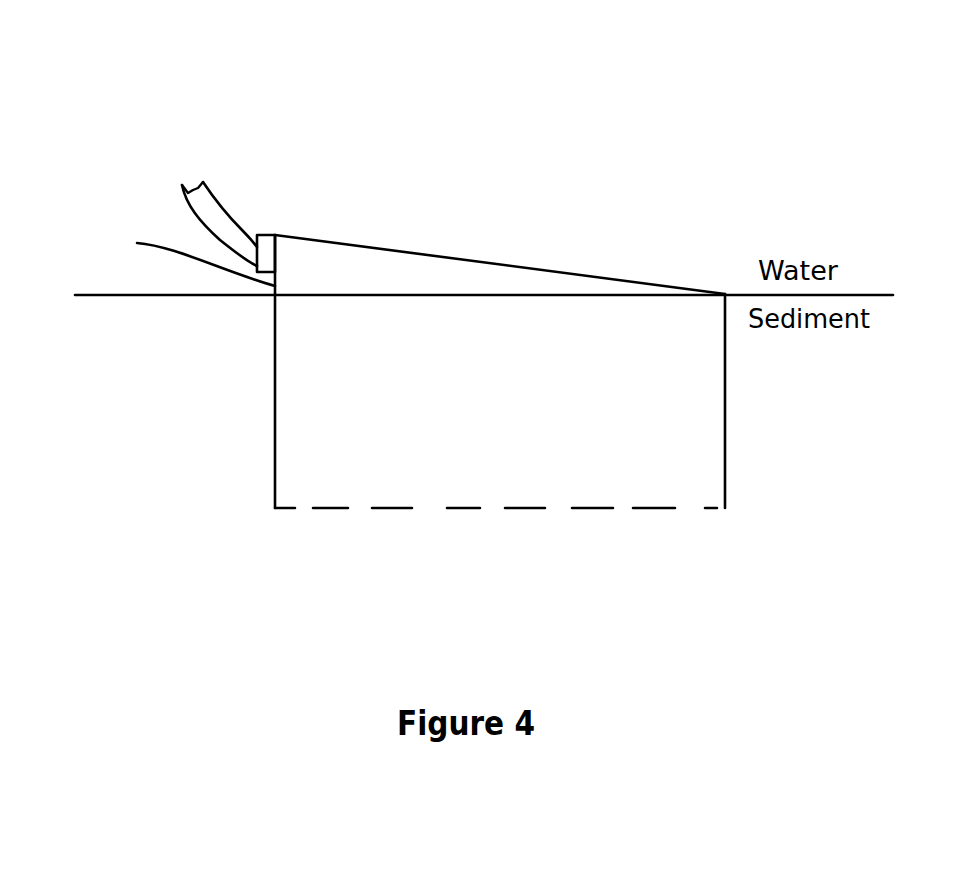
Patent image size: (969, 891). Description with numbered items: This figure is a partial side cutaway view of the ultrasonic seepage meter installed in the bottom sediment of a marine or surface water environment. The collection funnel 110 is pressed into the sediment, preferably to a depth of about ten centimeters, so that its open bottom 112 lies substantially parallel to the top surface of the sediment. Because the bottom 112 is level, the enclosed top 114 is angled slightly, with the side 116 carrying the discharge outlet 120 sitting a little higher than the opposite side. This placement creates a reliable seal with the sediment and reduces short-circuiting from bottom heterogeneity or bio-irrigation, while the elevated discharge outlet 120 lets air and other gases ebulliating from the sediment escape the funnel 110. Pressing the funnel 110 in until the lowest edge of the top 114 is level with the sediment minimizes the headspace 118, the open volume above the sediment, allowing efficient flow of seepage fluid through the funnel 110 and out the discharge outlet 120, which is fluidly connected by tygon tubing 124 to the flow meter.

The collection funnel 110 is at (655, 284).
The open bottom 112 is at (600, 510).
The enclosed top 114 is at (528, 268).
The side 116 is at (171, 257).
The headspace 118 is at (348, 270).
The discharge outlet 120 is at (262, 233).
The tygon tubing 124 is at (188, 208).